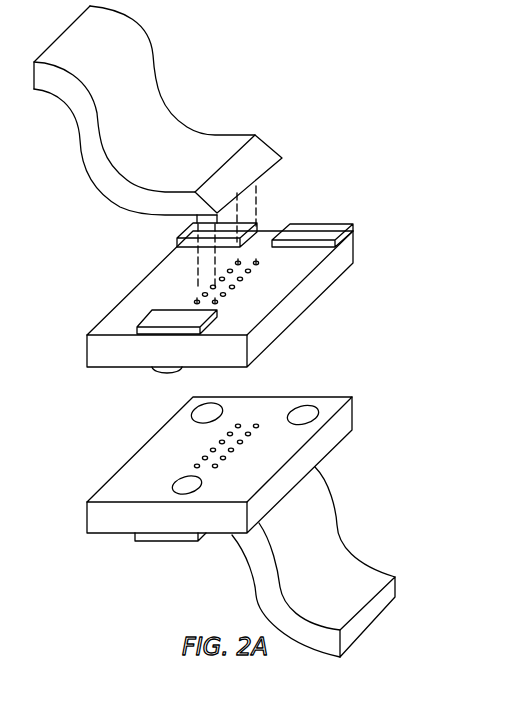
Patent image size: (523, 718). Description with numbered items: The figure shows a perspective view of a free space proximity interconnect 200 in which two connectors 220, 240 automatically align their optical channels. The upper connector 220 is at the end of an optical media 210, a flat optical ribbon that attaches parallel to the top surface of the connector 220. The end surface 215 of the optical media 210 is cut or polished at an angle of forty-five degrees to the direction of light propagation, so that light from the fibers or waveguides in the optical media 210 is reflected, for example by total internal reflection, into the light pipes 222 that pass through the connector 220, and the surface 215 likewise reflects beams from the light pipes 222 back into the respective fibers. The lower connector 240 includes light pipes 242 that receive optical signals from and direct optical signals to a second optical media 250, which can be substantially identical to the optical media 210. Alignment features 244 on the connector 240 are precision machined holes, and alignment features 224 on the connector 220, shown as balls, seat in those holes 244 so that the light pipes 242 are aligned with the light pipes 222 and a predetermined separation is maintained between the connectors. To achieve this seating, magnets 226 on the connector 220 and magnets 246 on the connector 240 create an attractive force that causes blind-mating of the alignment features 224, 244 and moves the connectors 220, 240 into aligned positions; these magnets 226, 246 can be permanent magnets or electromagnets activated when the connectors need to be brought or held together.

The free space proximity interconnect 200 is at (382, 80).
The optical media 210 is at (131, 79).
The end surface 215 is at (260, 168).
The connector 220 is at (288, 311).
The light pipes 222 is at (197, 300).
The alignment features 224 is at (168, 373).
The magnets 226 is at (323, 230).
The connector 240 is at (337, 423).
The light pipes 242 is at (197, 464).
The alignment features 244 is at (307, 414).
The magnets 246 is at (168, 543).
The optical media 250 is at (341, 592).